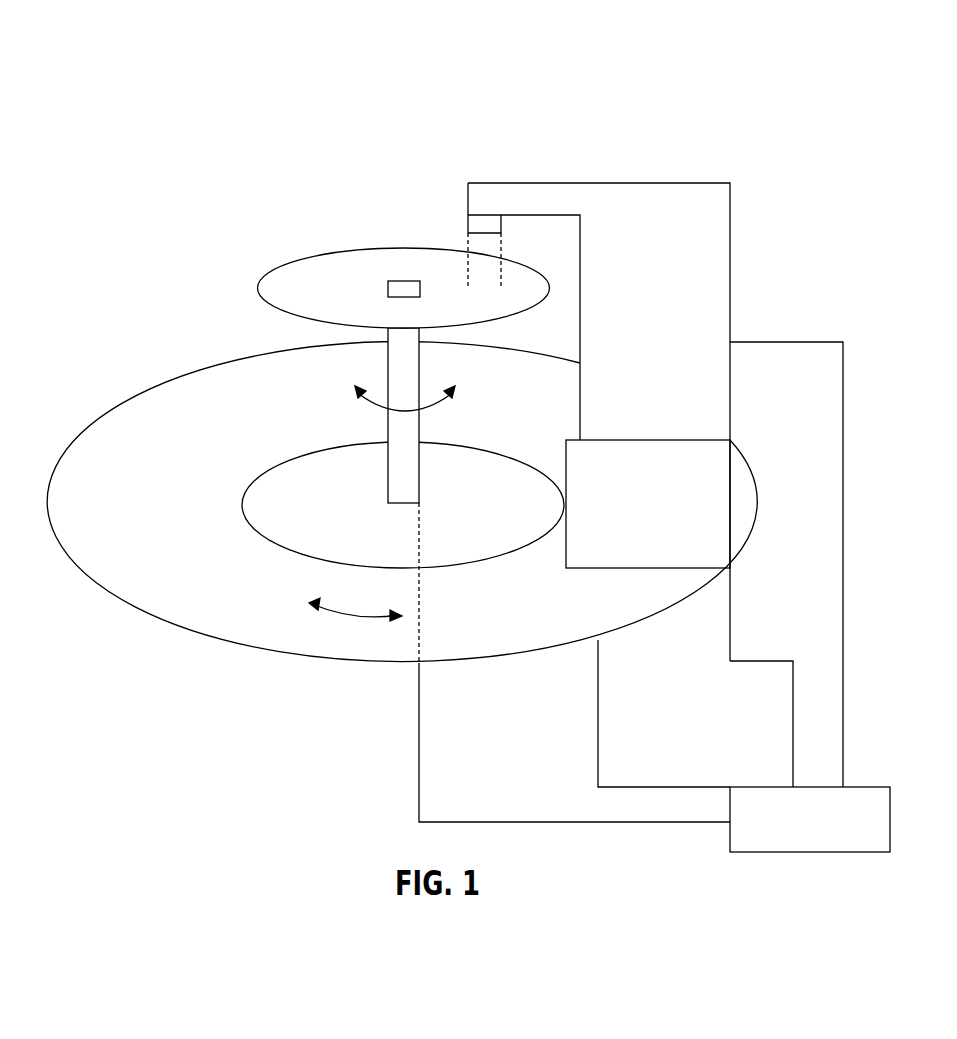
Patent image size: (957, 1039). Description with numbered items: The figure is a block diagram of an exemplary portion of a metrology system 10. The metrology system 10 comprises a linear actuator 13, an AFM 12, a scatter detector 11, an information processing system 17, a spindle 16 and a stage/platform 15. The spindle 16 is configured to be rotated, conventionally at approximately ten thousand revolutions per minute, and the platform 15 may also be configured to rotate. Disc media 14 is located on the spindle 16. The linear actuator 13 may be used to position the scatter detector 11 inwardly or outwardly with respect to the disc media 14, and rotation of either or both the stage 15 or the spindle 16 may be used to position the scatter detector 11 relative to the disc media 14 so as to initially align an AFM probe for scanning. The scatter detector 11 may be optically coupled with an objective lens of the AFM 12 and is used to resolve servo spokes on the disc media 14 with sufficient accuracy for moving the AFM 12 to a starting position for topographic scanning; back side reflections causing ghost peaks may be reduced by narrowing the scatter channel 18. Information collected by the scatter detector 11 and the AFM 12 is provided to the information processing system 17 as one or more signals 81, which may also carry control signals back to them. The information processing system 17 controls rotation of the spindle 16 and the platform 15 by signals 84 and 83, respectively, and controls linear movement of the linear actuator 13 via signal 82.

The metrology system 10 is at (711, 52).
The scatter detector 11 is at (468, 218).
The AFM 12 is at (665, 183).
The linear actuator 13 is at (730, 470).
The disc media 14 is at (327, 250).
The stage/platform 15 is at (118, 600).
The spindle 16 is at (404, 508).
The information processing system 17 is at (745, 787).
The scatter channel 18 is at (466, 248).
The signals 81 is at (762, 342).
The signal 82 is at (738, 661).
The signals 83 is at (598, 718).
The signals 84 is at (452, 822).